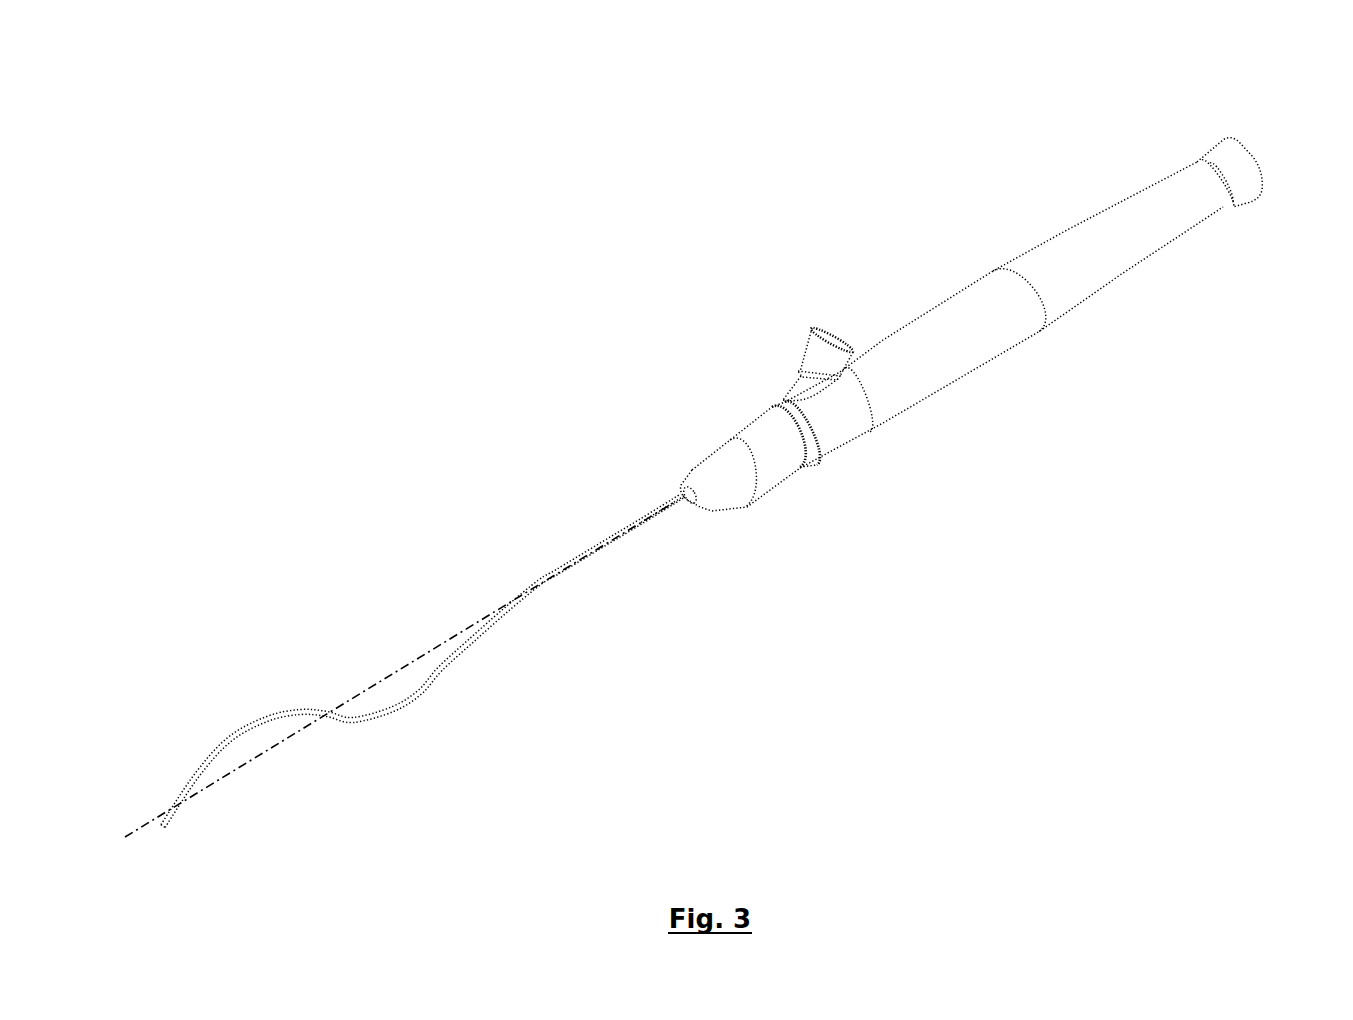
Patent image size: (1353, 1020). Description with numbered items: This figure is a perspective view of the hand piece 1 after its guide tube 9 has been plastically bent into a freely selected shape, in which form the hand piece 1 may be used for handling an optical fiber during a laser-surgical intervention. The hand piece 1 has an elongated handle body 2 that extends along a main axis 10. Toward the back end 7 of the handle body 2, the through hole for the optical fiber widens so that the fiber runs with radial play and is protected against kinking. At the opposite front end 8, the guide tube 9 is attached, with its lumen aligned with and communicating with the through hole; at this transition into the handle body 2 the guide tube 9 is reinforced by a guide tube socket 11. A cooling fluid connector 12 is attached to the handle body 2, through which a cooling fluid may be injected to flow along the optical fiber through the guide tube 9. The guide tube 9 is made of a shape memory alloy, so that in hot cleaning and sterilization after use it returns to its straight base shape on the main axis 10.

The hand piece 1 is at (992, 228).
The handle body 2 is at (828, 467).
The back end 7 is at (1252, 157).
The front end 8 is at (690, 462).
The guide tube 9 is at (437, 663).
The main axis 10 is at (142, 830).
The guide tube socket 11 is at (676, 512).
The cooling fluid connector 12 is at (802, 345).